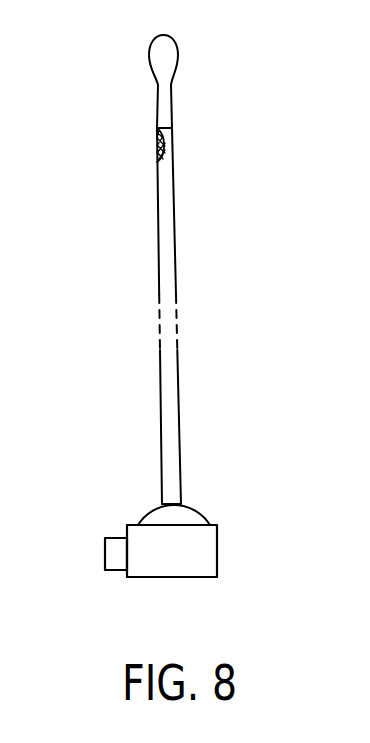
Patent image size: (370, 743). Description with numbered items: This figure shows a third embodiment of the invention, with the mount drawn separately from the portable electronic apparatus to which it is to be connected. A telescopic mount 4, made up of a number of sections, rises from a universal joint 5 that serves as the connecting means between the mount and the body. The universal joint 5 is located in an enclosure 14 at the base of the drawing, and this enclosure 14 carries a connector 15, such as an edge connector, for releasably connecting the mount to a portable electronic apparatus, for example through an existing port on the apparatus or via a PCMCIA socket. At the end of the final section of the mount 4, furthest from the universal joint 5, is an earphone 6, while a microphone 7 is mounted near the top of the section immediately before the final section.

The telescopic mount 4 is at (175, 252).
The universal joint 5 is at (188, 513).
The earphone 6 is at (178, 43).
The microphone 7 is at (157, 150).
The enclosure 14 is at (210, 555).
The connector 15 is at (100, 545).